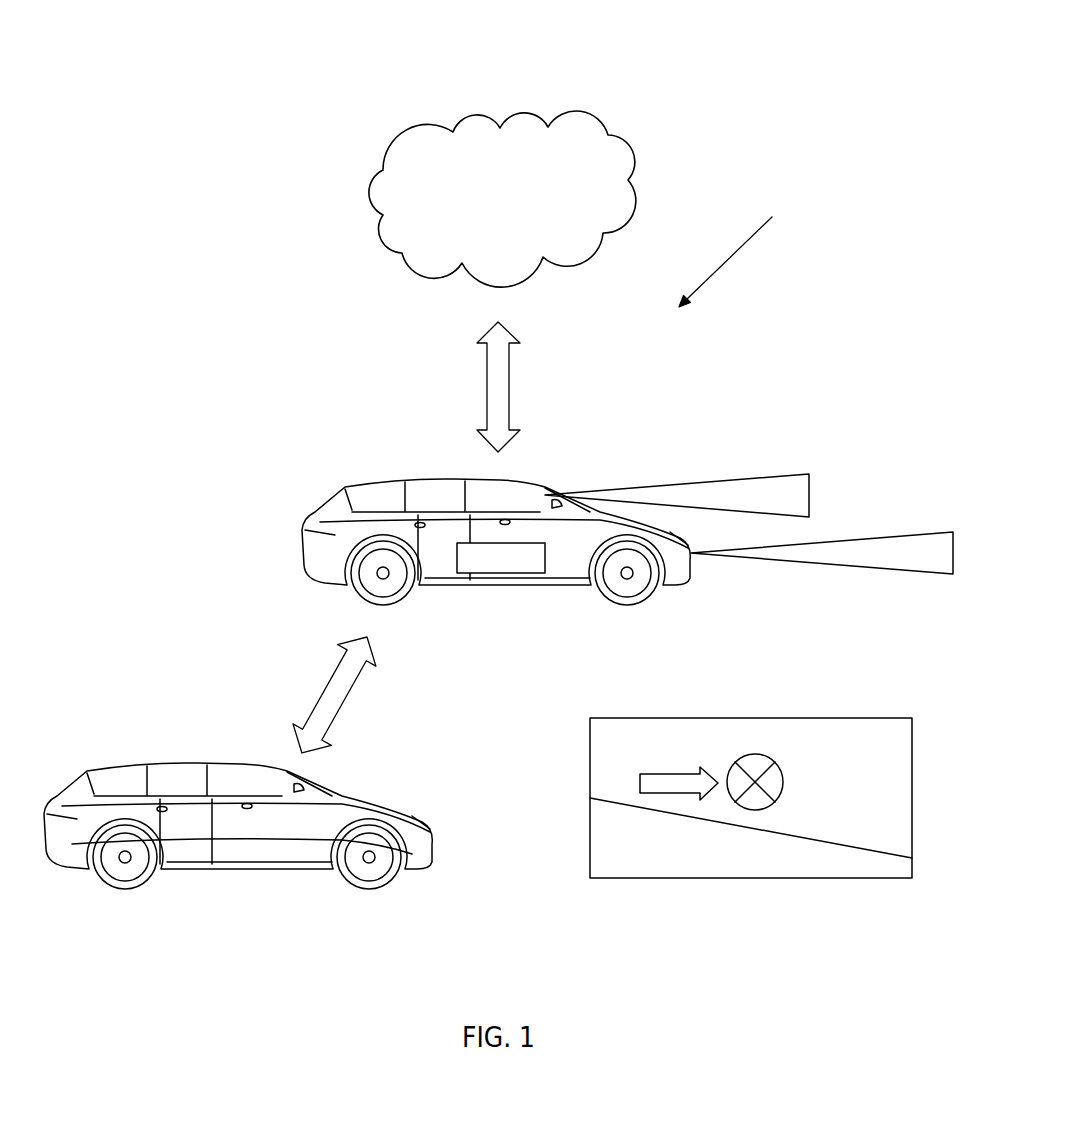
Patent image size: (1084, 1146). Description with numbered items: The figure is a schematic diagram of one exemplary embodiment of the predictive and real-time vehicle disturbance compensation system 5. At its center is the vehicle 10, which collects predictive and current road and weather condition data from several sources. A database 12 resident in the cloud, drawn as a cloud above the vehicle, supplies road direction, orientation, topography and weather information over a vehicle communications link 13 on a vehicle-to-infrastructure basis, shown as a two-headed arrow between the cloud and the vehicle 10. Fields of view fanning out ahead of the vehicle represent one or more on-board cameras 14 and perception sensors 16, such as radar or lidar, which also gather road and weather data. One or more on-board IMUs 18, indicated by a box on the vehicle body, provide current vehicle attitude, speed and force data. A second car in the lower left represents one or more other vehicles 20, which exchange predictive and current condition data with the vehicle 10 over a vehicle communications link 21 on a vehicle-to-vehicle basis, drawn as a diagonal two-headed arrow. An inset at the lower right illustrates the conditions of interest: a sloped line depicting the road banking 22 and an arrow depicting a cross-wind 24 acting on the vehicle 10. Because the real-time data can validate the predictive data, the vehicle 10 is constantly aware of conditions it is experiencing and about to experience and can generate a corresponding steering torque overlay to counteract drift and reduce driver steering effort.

The system 5 is at (730, 248).
The vehicle 10 is at (520, 490).
The database 12 is at (608, 135).
The vehicle communications link 13 is at (485, 387).
The on-board cameras 14 is at (843, 540).
The perception sensors 16 is at (693, 481).
The on-board IMUs 18 is at (507, 578).
The other vehicles 20 is at (367, 802).
The vehicle communications link 21 is at (330, 687).
The banking 22 is at (847, 843).
The cross-wind 24 is at (677, 770).